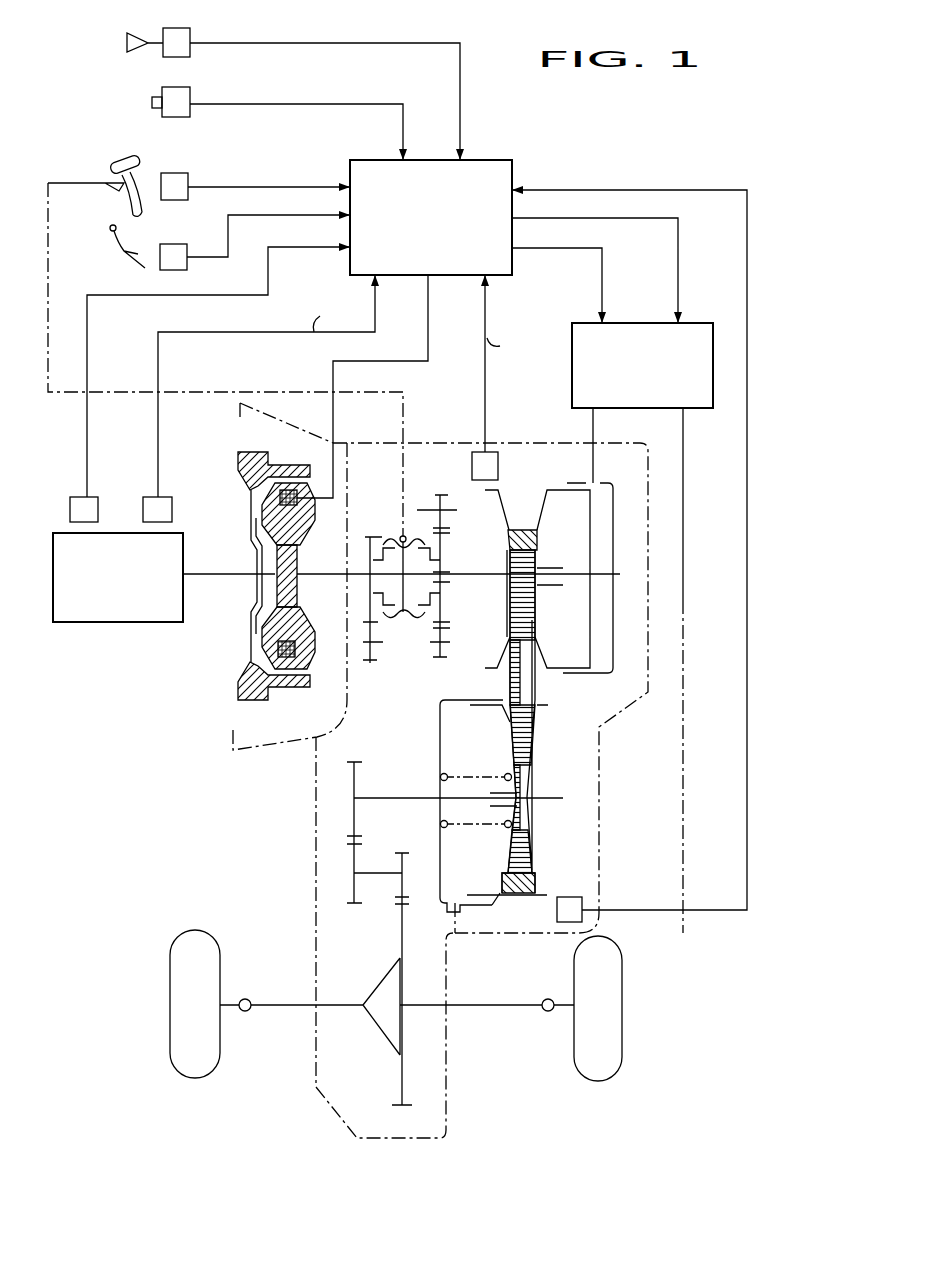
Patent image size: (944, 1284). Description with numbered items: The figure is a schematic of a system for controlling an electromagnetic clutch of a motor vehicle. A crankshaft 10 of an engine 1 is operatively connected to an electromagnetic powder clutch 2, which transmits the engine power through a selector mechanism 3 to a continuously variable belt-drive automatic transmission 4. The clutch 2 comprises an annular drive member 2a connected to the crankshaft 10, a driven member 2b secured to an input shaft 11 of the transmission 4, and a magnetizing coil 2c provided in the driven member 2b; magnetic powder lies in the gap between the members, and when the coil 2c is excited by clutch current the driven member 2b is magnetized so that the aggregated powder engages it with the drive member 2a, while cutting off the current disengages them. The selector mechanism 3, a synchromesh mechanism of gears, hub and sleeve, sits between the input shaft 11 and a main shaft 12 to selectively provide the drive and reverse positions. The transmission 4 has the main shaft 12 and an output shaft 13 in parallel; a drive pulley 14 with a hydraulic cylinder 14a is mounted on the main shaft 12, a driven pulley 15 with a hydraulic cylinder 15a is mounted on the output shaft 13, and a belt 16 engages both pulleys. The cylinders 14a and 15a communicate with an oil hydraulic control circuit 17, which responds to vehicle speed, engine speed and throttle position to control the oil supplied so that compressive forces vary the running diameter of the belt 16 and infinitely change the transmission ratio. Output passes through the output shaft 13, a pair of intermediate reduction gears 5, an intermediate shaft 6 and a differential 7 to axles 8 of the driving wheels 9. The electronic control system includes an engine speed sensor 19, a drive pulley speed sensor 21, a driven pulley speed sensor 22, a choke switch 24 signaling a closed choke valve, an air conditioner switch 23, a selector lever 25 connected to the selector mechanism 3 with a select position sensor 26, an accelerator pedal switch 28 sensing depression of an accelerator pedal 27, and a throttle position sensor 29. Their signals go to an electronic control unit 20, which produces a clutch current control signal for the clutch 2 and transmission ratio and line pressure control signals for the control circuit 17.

The engine 1 is at (85, 622).
The electromagnetic powder clutch 2 is at (310, 488).
The annular drive member 2a is at (238, 470).
The driven member 2b is at (304, 532).
The magnetizing coil 2c is at (298, 490).
The selector mechanism 3 is at (390, 531).
The continuously variable belt-drive automatic transmission 4 is at (531, 498).
The intermediate reduction gears 5 is at (356, 760).
The intermediate shaft 6 is at (373, 872).
The differential 7 is at (387, 982).
The axles 8 is at (516, 1000).
The vehicle driving wheels 9 is at (220, 1048).
The crankshaft 10 is at (232, 576).
The input shaft 11 is at (318, 576).
The main shaft 12 is at (489, 583).
The output shaft 13 is at (400, 793).
The drive pulley 14 is at (503, 526).
The hydraulic cylinder 14a is at (602, 548).
The driven pulley 15 is at (537, 716).
The hydraulic cylinder 15a is at (458, 723).
The belt 16 is at (505, 680).
The oil hydraulic control circuit 17 is at (572, 370).
The engine speed sensor 19 is at (150, 497).
The electronic control unit 20 is at (509, 162).
The drive pulley speed sensor 21 is at (498, 466).
The driven pulley speed sensor 22 is at (580, 886).
The air conditioner switch 23 is at (192, 98).
The choke switch 24 is at (192, 32).
The selector lever 25 is at (112, 165).
The select position sensor 26 is at (189, 177).
The accelerator pedal 27 is at (118, 254).
The accelerator pedal switch 28 is at (188, 247).
The throttle position sensor 29 is at (78, 497).